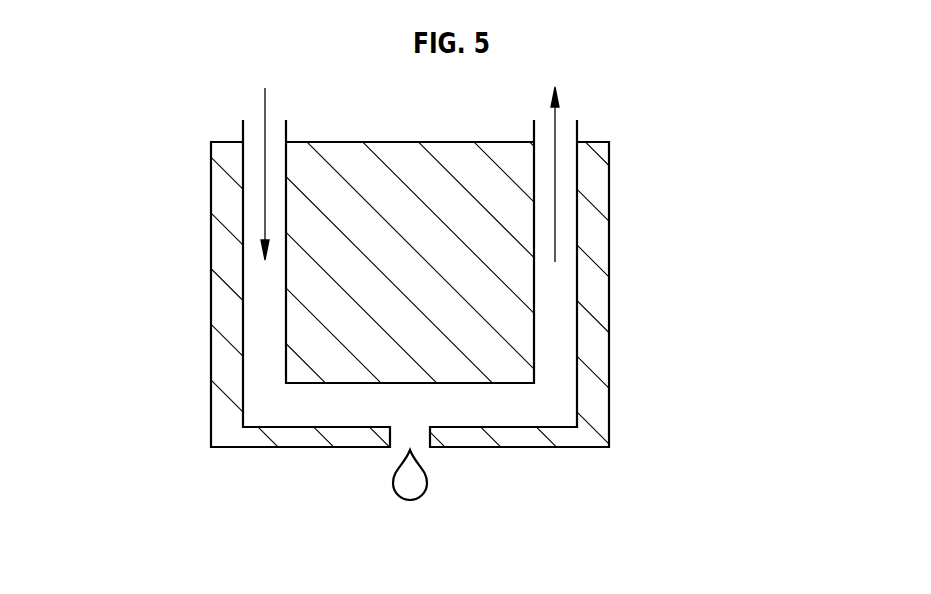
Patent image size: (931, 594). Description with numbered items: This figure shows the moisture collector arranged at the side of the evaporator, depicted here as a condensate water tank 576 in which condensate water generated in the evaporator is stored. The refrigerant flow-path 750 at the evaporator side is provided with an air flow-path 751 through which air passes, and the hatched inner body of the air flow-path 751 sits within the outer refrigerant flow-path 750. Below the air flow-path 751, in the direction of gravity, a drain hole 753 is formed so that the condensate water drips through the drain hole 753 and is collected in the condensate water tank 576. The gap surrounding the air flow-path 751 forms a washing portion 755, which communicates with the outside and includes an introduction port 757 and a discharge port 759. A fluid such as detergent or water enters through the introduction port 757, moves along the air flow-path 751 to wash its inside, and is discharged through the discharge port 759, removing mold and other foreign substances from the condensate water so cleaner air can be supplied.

The condensate water tank 576 is at (324, 297).
The refrigerant flow-path 750 is at (222, 358).
The air flow-path 751 is at (560, 341).
The drain hole 753 is at (410, 435).
The washing portion 755 is at (474, 317).
The introduction port 757 is at (255, 158).
The discharge port 759 is at (565, 158).